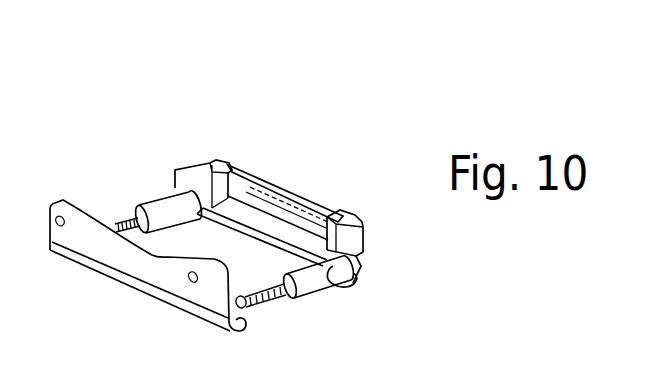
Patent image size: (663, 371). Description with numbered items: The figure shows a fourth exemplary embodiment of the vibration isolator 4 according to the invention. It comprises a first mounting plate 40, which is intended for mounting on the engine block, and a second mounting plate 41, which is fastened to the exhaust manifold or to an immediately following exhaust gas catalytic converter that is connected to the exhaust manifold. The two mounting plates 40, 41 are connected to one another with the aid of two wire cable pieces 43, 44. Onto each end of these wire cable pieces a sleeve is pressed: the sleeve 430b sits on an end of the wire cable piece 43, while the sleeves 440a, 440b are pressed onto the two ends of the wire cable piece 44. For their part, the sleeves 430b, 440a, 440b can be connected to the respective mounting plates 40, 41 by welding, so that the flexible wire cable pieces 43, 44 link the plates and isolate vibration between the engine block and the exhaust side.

The vibration isolator 4 is at (367, 143).
The first mounting plate 40 is at (78, 228).
The second mounting plate 41 is at (251, 195).
The wire cable piece 43 is at (168, 162).
The sleeve 430b is at (168, 205).
The wire cable piece 44 is at (270, 266).
The sleeve 440a is at (247, 302).
The sleeve 440b is at (348, 272).